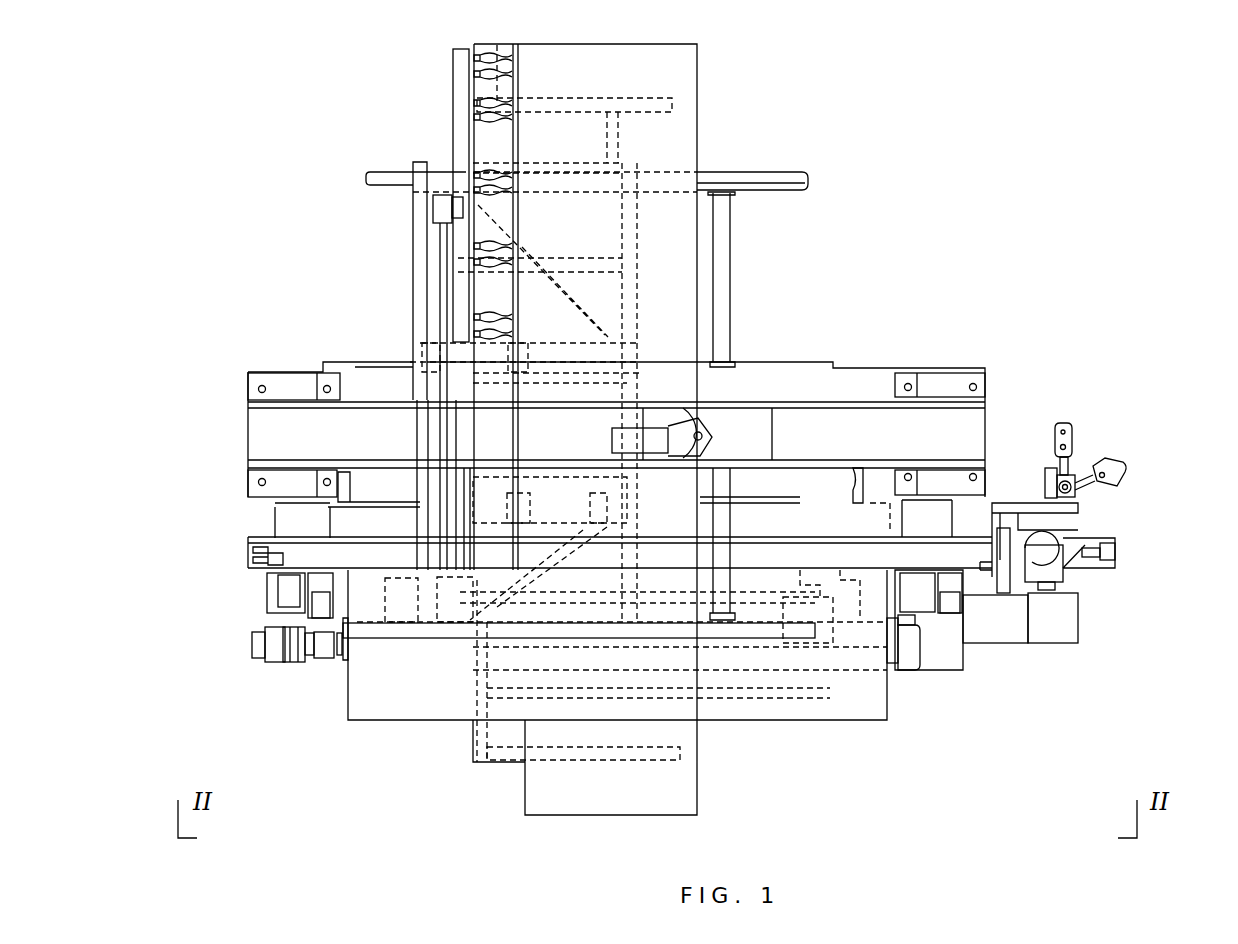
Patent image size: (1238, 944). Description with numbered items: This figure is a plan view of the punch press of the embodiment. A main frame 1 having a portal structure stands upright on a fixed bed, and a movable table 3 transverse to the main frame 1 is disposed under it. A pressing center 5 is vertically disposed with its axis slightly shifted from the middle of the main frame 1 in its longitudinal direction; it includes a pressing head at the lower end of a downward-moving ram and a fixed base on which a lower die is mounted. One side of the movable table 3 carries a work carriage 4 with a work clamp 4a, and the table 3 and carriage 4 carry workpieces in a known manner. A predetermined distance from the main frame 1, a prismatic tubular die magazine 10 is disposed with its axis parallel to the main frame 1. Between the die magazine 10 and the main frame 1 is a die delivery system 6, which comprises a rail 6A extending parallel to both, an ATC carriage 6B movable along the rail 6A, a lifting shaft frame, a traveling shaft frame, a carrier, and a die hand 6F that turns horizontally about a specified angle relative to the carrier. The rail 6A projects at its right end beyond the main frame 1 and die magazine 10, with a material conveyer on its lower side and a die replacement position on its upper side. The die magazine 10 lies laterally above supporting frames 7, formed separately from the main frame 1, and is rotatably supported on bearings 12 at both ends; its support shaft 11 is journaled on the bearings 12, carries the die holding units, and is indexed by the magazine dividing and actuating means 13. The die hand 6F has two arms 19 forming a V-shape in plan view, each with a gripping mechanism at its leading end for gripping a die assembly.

The main frame 1 is at (857, 407).
The movable table 3 is at (668, 293).
The work carriage 4 is at (455, 115).
The work clamp 4a is at (512, 88).
The pressing center 5 is at (717, 420).
The die delivery system 6 is at (1012, 407).
The rail 6A is at (935, 553).
The ATC carriage 6B is at (1072, 552).
The die hand 6F is at (1085, 459).
The supporting frames 7 is at (283, 673).
The die magazine 10 is at (744, 710).
The support shaft 11 is at (833, 670).
The bearings 12 is at (325, 648).
The magazine dividing and actuating means 13 is at (261, 672).
The arms 19 is at (1060, 423).